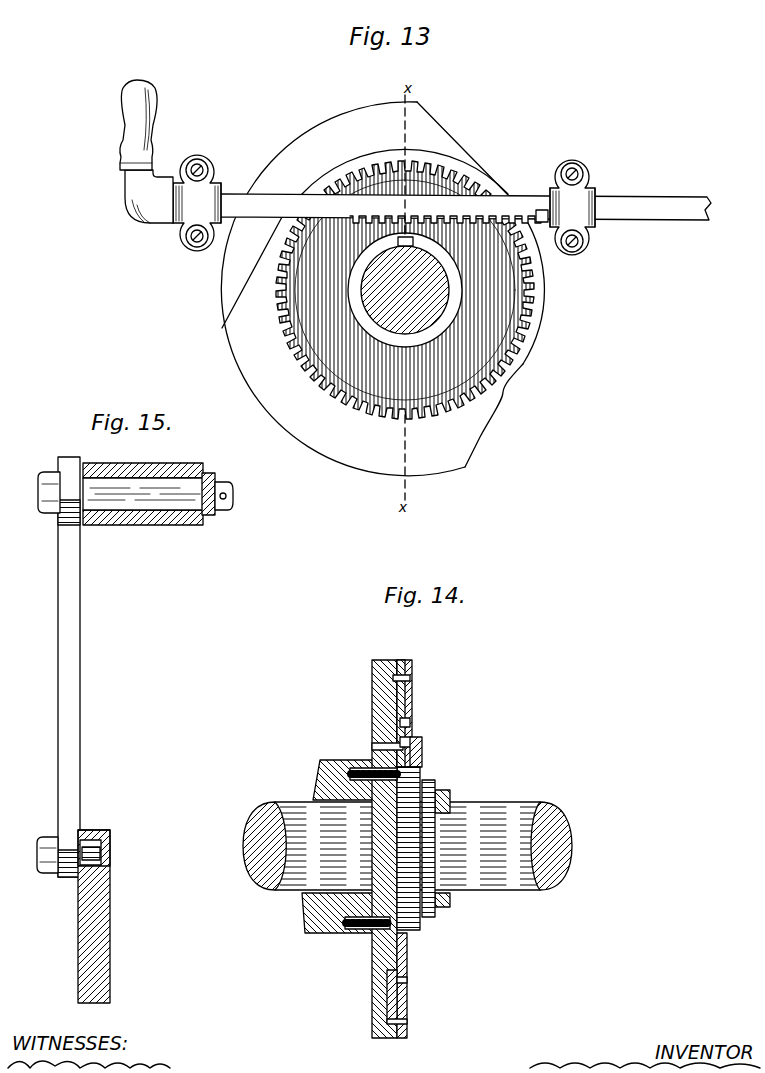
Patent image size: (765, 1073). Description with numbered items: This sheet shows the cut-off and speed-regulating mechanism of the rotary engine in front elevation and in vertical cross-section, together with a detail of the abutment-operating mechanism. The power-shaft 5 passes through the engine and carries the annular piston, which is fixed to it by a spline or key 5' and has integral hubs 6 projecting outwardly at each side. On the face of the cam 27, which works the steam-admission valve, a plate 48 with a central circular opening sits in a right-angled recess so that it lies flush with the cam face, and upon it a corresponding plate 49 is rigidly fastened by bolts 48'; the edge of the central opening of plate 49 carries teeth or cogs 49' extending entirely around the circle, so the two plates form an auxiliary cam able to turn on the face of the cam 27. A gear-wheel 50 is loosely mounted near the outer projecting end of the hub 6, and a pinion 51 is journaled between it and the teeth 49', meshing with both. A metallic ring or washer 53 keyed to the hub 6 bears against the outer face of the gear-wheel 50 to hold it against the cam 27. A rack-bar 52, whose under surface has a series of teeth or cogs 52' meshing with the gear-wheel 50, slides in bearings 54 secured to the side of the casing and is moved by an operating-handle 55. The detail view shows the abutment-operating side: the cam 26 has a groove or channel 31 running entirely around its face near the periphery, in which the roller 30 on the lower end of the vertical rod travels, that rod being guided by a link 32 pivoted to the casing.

In FIG. 13, the power-shaft 5 is at (405, 290).
In FIG. 14, the power-shaft 5 is at (410, 846).
In FIG. 13, the spline or key 5' is at (416, 235).
In FIG. 14, the hub 6 is at (320, 777).
In FIG. 15, the cam 26 is at (100, 916).
In FIG. 13, the cam 27 is at (432, 138).
In FIG. 14, the cam 27 is at (373, 705).
In FIG. 15, the roller 30 is at (102, 850).
In FIG. 15, the groove or channel 31 is at (108, 840).
In FIG. 15, the link 32 is at (70, 614).
In FIG. 14, the plate 48 is at (415, 841).
In FIG. 13, the bolts 48' is at (405, 299).
In FIG. 14, the bolts 48' is at (409, 844).
In FIG. 14, the plate 49 is at (439, 849).
In FIG. 13, the teeth or cogs 49' is at (478, 415).
In FIG. 14, the teeth or cogs 49' is at (447, 824).
In FIG. 13, the gear-wheel 50 is at (405, 290).
In FIG. 14, the gear-wheel 50 is at (417, 780).
In FIG. 13, the pinion 51 is at (455, 163).
In FIG. 14, the pinion 51 is at (411, 740).
In FIG. 13, the rack-bar 52 is at (465, 206).
In FIG. 14, the rack-bar 52 is at (456, 735).
In FIG. 13, the teeth or cogs 52' is at (540, 197).
In FIG. 13, the metallic ring or washer 53 is at (363, 317).
In FIG. 14, the metallic ring or washer 53 is at (430, 780).
In FIG. 13, the bearings 54 is at (203, 192).
In FIG. 13, the operating-handle 55 is at (152, 138).